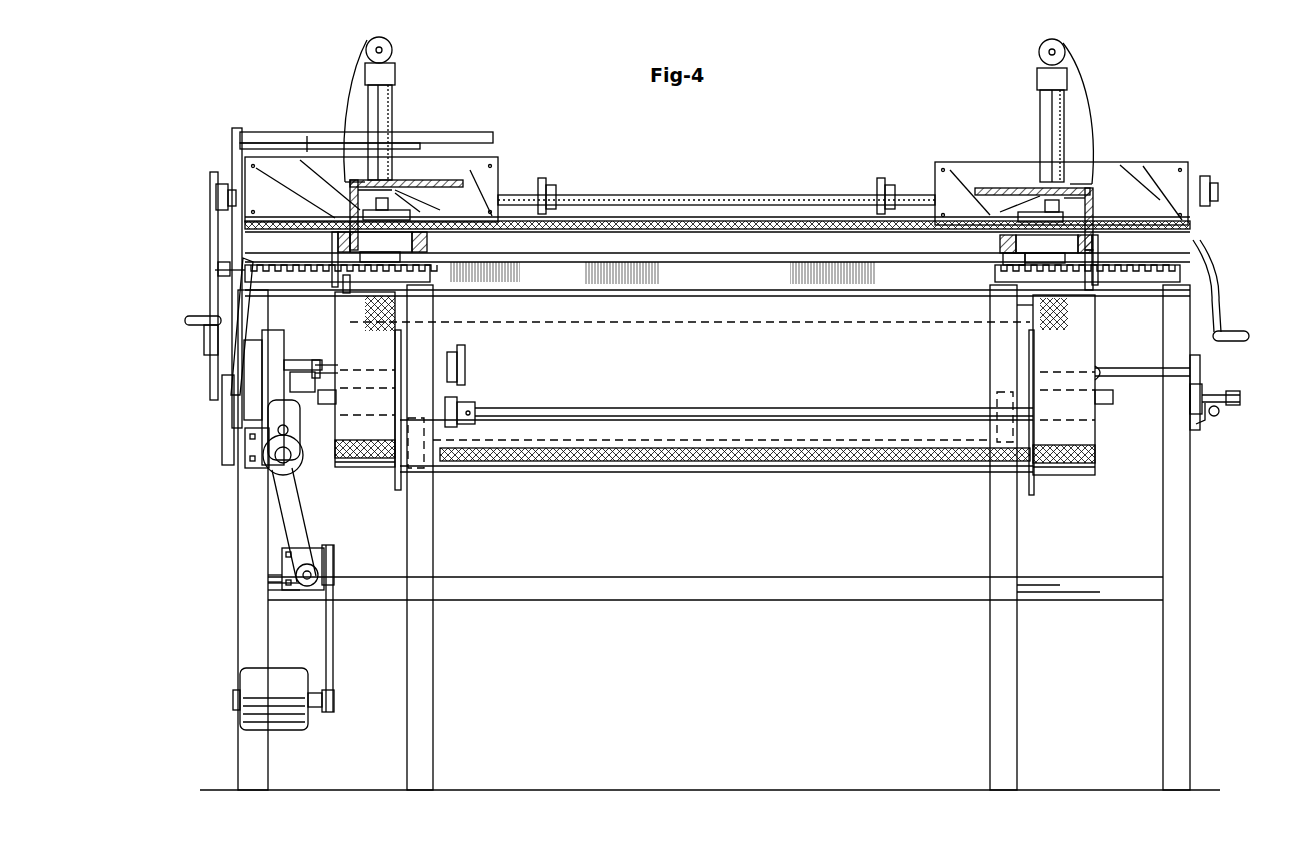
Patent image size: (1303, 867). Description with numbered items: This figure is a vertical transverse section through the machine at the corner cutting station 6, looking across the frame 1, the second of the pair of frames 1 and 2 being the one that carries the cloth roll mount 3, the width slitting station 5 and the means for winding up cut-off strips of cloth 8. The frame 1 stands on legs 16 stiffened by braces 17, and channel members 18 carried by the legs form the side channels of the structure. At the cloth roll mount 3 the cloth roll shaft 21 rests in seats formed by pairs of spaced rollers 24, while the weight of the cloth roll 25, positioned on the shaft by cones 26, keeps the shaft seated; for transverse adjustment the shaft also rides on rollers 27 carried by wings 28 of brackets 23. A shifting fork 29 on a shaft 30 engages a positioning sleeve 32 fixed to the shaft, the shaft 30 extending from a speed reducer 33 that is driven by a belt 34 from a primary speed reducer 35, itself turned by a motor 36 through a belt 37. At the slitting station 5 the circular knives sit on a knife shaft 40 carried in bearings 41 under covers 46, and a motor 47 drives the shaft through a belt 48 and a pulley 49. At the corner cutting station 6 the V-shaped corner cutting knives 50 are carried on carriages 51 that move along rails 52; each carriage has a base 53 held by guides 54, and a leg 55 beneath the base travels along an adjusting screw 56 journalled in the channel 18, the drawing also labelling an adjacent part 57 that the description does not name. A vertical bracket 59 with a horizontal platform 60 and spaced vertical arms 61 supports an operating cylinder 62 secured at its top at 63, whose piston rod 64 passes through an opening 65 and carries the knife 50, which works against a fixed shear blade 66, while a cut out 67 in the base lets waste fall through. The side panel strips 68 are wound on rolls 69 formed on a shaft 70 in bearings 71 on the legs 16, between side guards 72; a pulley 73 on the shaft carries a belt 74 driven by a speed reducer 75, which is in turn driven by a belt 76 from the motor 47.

The frame 1 is at (1200, 542).
The frame 2 is at (717, 224).
The cloth roll mount 3 is at (1236, 388).
The width slitting station 5 is at (1180, 160).
The corner cutting station 6 is at (1100, 102).
The means for winding up cut-off strips of cloth 8 is at (1102, 356).
The legs 16 is at (238, 581).
The braces 17 is at (650, 577).
The channel members 18 is at (232, 250).
The cloth roll shaft 21 is at (1242, 396).
The brackets 23 is at (1208, 420).
The rollers 24 is at (1204, 394).
The cloth roll 25 is at (1020, 318).
The cones 26 is at (328, 366).
The rollers 27 is at (1222, 414).
The wings 28 is at (1196, 420).
The shifting fork 29 is at (280, 412).
The shaft 30 is at (278, 432).
The positioning sleeve 32 is at (292, 374).
The speed reducer 33 is at (268, 458).
The belt 34 is at (318, 540).
The primary speed reducer 35 is at (282, 554).
The motor 36 is at (334, 664).
The belt 37 is at (284, 674).
The knife shaft 40 is at (678, 194).
The bearings 41 is at (224, 176).
The covers 46 is at (490, 156).
The motor 47 is at (232, 318).
The belt 48 is at (208, 282).
The pulley 49 is at (210, 180).
The corner cutting knives 50 is at (410, 214).
The carriages 51 is at (340, 238).
The rails 52 is at (876, 282).
The base 53 is at (990, 268).
The guides 54 is at (1010, 284).
The leg 55 is at (336, 290).
The adjusting screw 56 is at (298, 268).
The roller 57 is at (460, 278).
The vertical bracket 59 is at (350, 196).
The horizontal platform 60 is at (430, 176).
The vertical arms 61 is at (348, 82).
The operating cylinder 62 is at (395, 95).
The cylinder attachment point 63 is at (385, 44).
The piston rod 64 is at (350, 205).
The opening 65 is at (392, 196).
The fixed shear blade 66 is at (438, 246).
The cut out 67 is at (715, 313).
The side panel strips 68 is at (398, 325).
The rolls 69 is at (380, 462).
The shaft 70 is at (340, 410).
The bearings 71 is at (997, 436).
The side guards 72 is at (401, 486).
The pulley 73 is at (476, 402).
The belt 74 is at (465, 392).
The speed reducer 75 is at (255, 385).
The belt 76 is at (222, 376).